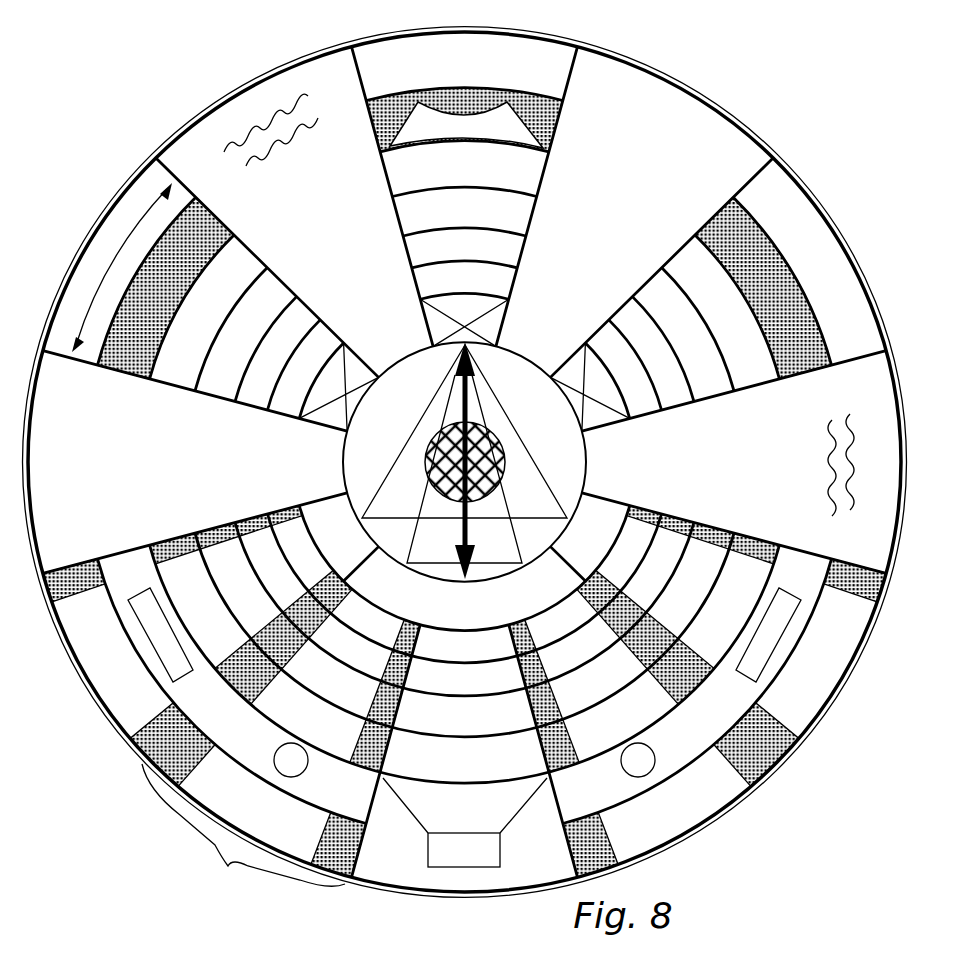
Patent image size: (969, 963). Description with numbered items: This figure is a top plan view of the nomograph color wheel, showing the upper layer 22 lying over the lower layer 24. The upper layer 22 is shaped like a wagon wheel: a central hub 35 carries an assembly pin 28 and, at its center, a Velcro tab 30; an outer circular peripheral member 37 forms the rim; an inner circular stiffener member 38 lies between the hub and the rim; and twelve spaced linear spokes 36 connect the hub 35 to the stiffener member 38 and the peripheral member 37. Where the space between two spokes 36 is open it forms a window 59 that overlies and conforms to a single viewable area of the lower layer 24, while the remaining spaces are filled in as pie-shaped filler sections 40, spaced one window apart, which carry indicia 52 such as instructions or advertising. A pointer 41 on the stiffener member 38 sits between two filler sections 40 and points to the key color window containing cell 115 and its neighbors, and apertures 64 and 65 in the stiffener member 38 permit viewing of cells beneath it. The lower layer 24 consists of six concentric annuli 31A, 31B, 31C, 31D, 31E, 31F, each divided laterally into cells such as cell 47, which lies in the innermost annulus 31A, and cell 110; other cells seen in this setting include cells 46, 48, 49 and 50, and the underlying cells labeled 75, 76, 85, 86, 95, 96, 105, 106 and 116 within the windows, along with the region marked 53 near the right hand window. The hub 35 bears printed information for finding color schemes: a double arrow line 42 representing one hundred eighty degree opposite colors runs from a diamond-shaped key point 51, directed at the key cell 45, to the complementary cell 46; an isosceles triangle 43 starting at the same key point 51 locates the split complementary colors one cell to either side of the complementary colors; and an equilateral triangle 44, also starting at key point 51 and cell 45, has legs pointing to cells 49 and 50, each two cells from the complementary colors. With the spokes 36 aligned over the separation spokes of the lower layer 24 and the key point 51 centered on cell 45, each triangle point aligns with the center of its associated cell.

The upper layer 22 is at (297, 86).
The lower layer 24 is at (383, 56).
The assembly pin 28 is at (433, 418).
The Velcro tab 30 is at (505, 462).
The innermost annulus 31A is at (320, 350).
The annulus 31B is at (253, 398).
The annulus 31C is at (290, 262).
The annulus 31D is at (178, 370).
The annulus 31E is at (760, 643).
The annulus 31F is at (92, 362).
The central hub 35 is at (519, 418).
The spokes 36 is at (540, 205).
The outer circular peripheral member 37 is at (712, 104).
The inner circular stiffener member 38 is at (198, 214).
The filler sections 40 is at (269, 213).
The pointer 41 is at (468, 106).
The double arrow line 42 is at (345, 468).
The isosceles triangle 43 is at (548, 472).
The equilateral triangle 44 is at (400, 452).
The key cell 45 is at (447, 286).
The cell 46 is at (447, 661).
The cell 47 is at (351, 638).
The cell 48 is at (532, 638).
The cell 49 is at (293, 538).
The cell 50 is at (633, 537).
The key point 51 is at (470, 362).
The indicia 52 is at (262, 148).
The ring segment 53 is at (578, 355).
The window 59 is at (170, 892).
The aperture 64 is at (168, 652).
The aperture 65 is at (302, 770).
The ring cell 75 is at (447, 254).
The ring cell 76 is at (447, 695).
The ring cell 85 is at (447, 221).
The ring cell 86 is at (447, 731).
The ring cell 95 is at (447, 176).
The ring cell 96 is at (447, 776).
The shaded band 105 is at (560, 124).
The ring cell 106 is at (441, 821).
The cell 110 is at (787, 713).
The key color cell 115 is at (416, 71).
The label box 116 is at (441, 863).